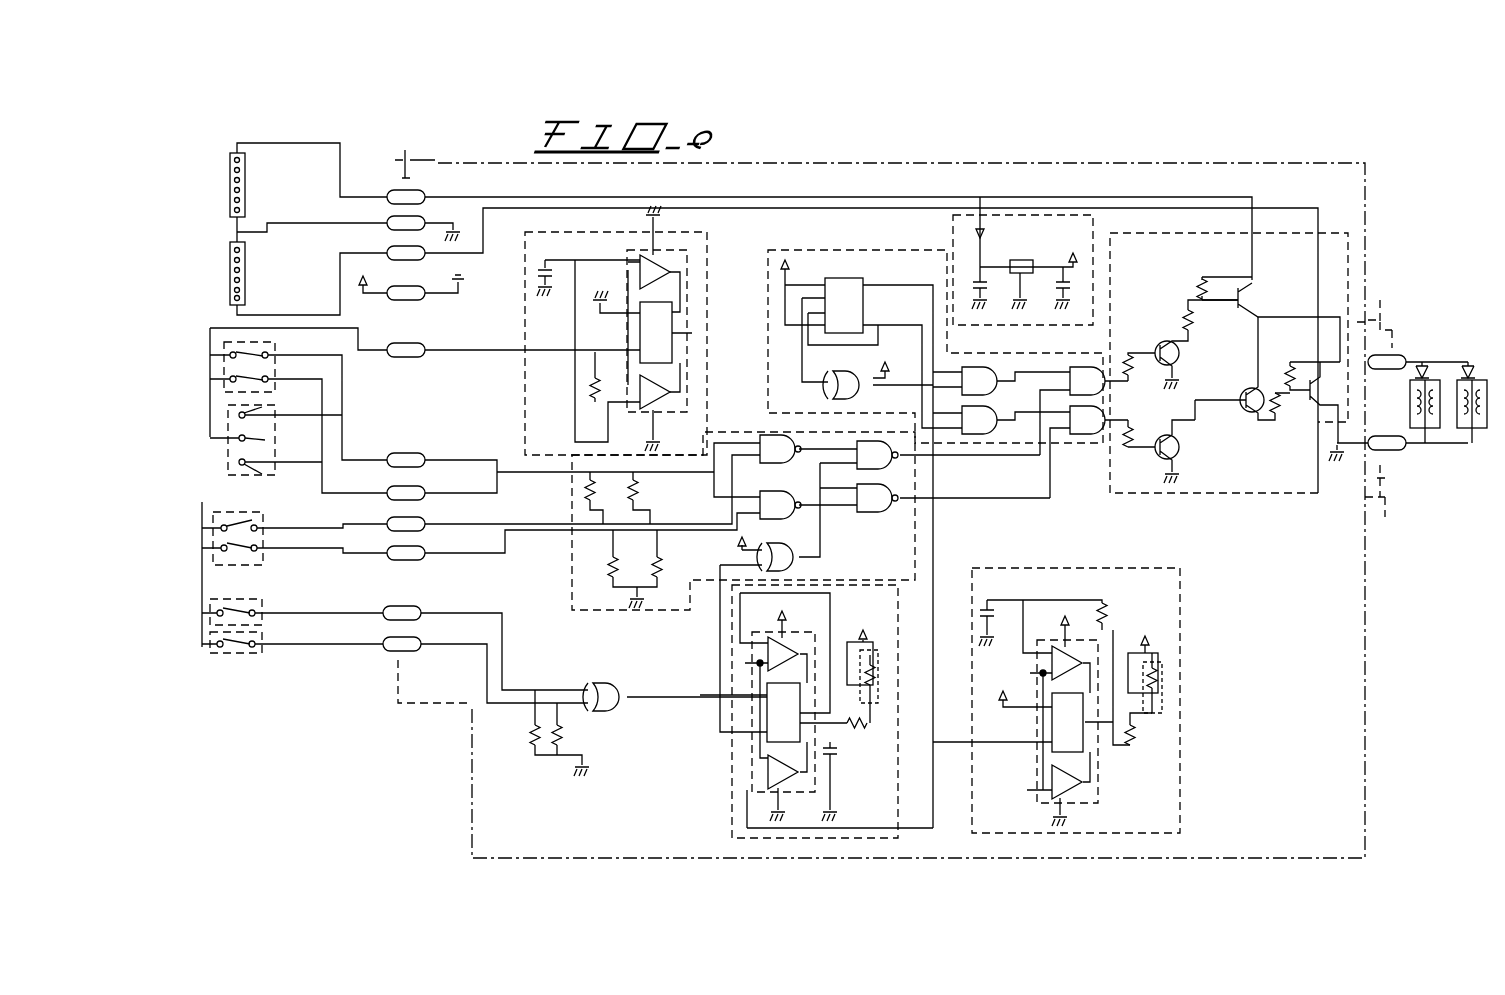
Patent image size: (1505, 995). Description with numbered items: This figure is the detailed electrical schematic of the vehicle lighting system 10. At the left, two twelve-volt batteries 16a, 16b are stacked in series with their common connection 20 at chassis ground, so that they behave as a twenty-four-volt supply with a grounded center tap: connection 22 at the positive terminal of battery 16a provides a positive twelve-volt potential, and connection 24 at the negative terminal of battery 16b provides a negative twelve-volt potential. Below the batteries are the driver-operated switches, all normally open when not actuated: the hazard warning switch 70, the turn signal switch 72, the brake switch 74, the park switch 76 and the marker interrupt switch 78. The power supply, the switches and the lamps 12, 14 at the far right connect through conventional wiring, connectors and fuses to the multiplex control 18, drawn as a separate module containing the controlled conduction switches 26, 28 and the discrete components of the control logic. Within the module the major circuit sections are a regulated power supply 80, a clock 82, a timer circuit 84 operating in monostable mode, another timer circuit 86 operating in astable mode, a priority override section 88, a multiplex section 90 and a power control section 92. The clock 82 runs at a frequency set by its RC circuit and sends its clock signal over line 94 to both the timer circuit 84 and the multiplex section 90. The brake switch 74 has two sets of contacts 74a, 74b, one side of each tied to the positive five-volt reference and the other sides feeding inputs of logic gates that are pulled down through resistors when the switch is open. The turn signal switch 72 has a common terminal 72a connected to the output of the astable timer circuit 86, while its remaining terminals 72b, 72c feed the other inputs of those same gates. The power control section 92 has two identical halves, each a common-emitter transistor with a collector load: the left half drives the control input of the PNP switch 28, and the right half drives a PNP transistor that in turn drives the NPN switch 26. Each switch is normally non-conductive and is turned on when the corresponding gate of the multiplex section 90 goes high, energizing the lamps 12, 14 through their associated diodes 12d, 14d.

The system 10 is at (342, 697).
The lamp 12 is at (1492, 428).
The diode 12d is at (1471, 362).
The lamp 14 is at (1448, 428).
The diode 14d is at (1432, 367).
The battery 16a is at (247, 198).
The battery 16b is at (247, 284).
The multiplex control 18 is at (412, 149).
The common connection 20 is at (244, 233).
The connection 22 is at (236, 143).
The connection 24 is at (242, 311).
The controlled conduction switch 26 is at (1305, 398).
The controlled conduction switch 28 is at (1237, 289).
The hazard warning switch 70 is at (219, 392).
The turn signal switch 72 is at (232, 447).
The common terminal 72a is at (248, 440).
The terminal 72b is at (248, 414).
The terminal 72c is at (244, 467).
The brake switch 74 is at (253, 573).
The contacts 74a is at (257, 528).
The contacts 74b is at (258, 550).
The park switch 76 is at (244, 605).
The marker interrupt switch 78 is at (236, 656).
The regulated power supply 80 is at (1084, 215).
The clock 82 is at (1180, 688).
The timer circuit 84 is at (730, 755).
The timer circuit 86 is at (545, 232).
The priority override section 88 is at (916, 552).
The multiplex section 90 is at (769, 261).
The power control section 92 is at (1231, 341).
The line 94 is at (947, 745).